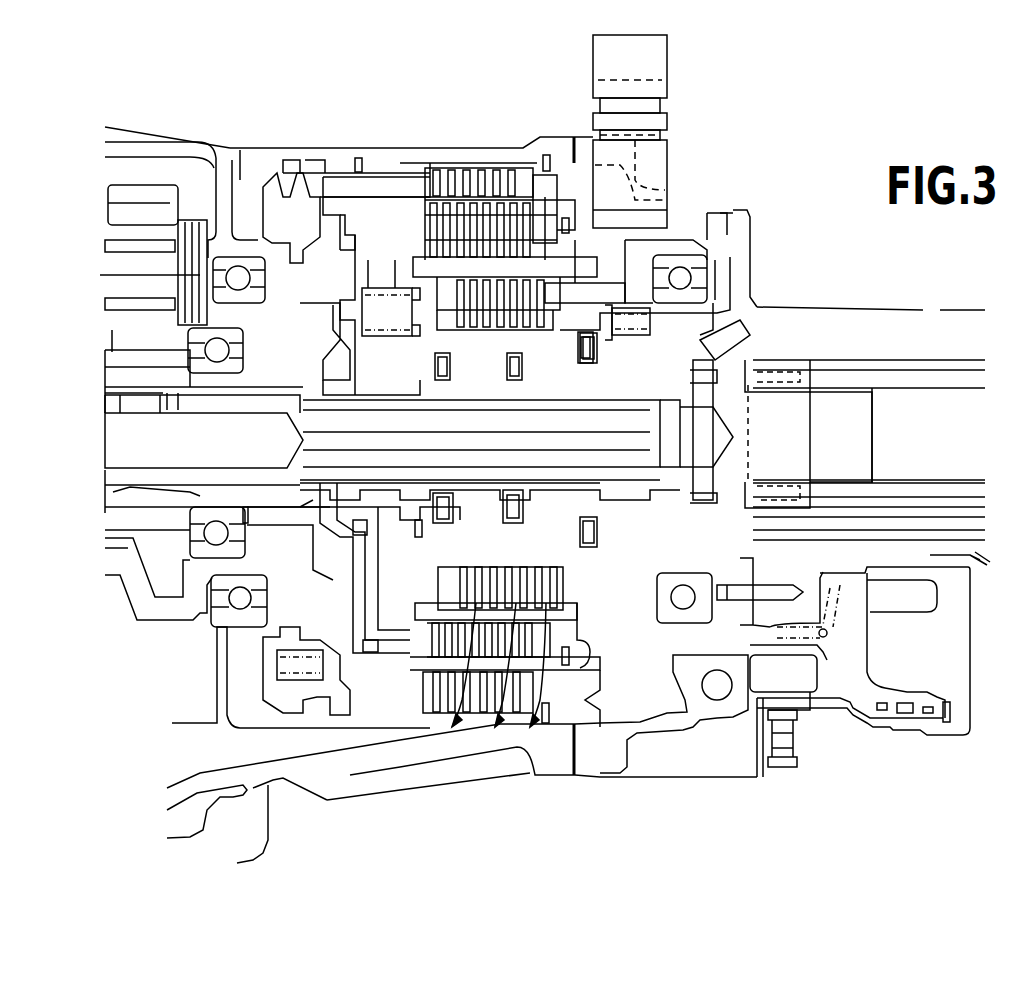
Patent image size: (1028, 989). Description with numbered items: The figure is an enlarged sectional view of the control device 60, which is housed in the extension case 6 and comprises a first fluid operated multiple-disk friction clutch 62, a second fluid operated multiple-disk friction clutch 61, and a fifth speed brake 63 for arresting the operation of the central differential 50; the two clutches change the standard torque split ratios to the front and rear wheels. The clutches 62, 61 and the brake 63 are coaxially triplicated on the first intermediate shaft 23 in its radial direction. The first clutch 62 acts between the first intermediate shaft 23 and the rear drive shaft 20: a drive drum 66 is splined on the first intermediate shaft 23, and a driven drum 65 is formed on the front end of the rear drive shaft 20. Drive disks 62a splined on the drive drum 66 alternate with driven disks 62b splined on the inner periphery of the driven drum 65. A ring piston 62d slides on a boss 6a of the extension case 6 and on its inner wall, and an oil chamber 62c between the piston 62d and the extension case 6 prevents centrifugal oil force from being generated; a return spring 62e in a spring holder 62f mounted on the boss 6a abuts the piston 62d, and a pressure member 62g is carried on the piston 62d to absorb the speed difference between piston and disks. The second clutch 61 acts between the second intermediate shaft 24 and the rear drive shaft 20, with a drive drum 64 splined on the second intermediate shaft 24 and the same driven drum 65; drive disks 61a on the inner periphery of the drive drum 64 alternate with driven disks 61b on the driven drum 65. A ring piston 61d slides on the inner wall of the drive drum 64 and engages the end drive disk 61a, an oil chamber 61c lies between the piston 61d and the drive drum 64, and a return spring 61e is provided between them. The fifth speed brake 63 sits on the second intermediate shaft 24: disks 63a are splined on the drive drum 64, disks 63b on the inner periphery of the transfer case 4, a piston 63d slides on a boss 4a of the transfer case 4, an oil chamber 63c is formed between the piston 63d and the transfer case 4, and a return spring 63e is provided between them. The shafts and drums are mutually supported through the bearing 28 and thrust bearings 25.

The transfer case 4 is at (547, 495).
The boss of the transfer case 4a is at (248, 200).
The extension case 6 is at (905, 333).
The boss of the extension case 6a is at (715, 352).
The rear drive shaft 20 is at (933, 457).
The first intermediate shaft 23 is at (105, 482).
The second intermediate shaft 24 is at (204, 431).
The thrust bearing 25 is at (590, 338).
The bearing 28 is at (190, 390).
The central differential 50 is at (135, 178).
The control device 60 is at (713, 113).
The second clutch 61 is at (550, 230).
The drive disks 61a is at (472, 210).
The driven disks 61b is at (500, 220).
The oil chamber 61c is at (333, 338).
The ring piston 61d is at (345, 308).
The return spring 61e is at (391, 298).
The first clutch 62 is at (728, 230).
The drive disks 62a is at (478, 318).
The driven disks 62b is at (515, 340).
The oil chamber 62c is at (738, 290).
The ring piston 62d is at (718, 258).
The return spring 62e is at (605, 335).
The spring holder 62f is at (700, 262).
The pressure member 62g is at (600, 290).
The 5th speed brake 63 is at (378, 175).
The disks 63a is at (440, 175).
The disks 63b is at (430, 172).
The oil chamber 63c is at (268, 187).
The piston 63d is at (312, 172).
The return spring 63e is at (320, 700).
The drive drum 64 is at (317, 570).
The driven drum 65 is at (592, 615).
The drive drum 66 is at (477, 380).